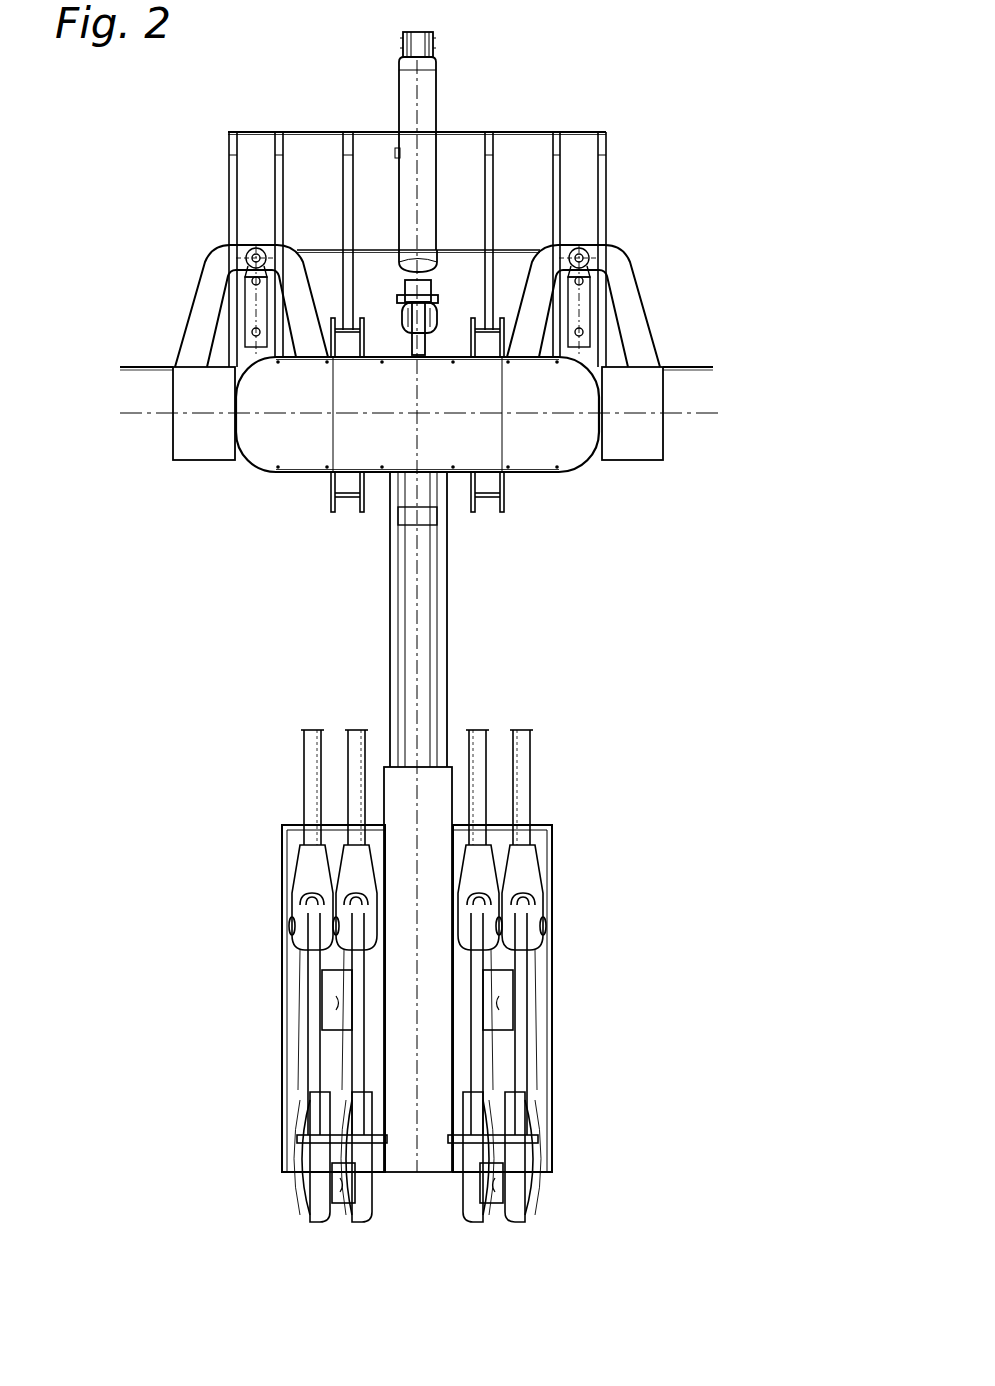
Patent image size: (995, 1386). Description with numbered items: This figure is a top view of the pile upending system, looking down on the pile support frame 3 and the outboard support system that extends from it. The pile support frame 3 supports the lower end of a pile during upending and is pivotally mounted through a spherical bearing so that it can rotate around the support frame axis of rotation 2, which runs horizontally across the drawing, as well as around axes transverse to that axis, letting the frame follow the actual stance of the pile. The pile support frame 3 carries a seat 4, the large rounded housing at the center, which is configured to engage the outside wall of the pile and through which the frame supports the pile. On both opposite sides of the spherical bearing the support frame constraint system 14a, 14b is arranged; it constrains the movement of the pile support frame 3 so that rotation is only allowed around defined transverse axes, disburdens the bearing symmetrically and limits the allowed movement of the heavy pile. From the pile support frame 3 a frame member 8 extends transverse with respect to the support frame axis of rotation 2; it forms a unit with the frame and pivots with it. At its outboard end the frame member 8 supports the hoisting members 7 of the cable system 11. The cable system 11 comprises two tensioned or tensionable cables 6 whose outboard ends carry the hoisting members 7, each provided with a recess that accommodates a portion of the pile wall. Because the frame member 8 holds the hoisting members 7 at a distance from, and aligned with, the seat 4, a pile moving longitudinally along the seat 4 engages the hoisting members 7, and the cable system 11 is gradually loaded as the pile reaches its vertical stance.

The support frame axis of rotation 2 is at (702, 413).
The pile support frame 3 is at (186, 477).
The seat 4 is at (567, 388).
The cables 6 is at (523, 750).
The hoisting member 7 is at (558, 1214).
The frame member 8 is at (440, 660).
The cable system 11 is at (296, 759).
The support frame constraint system 14a is at (348, 518).
The support frame constraint system 14b is at (489, 518).